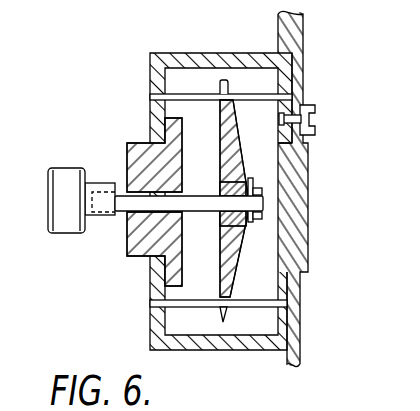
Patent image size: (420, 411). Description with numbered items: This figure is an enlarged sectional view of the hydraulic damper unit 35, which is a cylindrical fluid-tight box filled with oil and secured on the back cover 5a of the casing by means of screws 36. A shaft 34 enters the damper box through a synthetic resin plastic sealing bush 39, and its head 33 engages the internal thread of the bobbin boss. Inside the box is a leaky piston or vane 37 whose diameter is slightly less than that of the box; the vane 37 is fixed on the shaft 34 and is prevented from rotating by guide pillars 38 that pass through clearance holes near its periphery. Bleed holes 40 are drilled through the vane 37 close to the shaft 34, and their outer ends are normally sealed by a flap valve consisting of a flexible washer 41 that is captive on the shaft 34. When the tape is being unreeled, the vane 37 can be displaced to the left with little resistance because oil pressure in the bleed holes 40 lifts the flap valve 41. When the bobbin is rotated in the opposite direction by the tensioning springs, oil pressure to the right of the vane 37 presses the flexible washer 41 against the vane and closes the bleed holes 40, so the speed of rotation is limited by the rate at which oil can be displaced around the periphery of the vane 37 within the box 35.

The back cover 5a is at (297, 70).
The head 33 is at (63, 180).
The shaft 34 is at (120, 192).
The hydraulic damper unit 35 is at (173, 50).
The screws 36 is at (312, 111).
The vane 37 is at (237, 242).
The guide pillars 38 is at (248, 97).
The sealing bush 39 is at (126, 238).
The bleed holes 40 is at (221, 180).
The flexible washer 41 is at (251, 183).